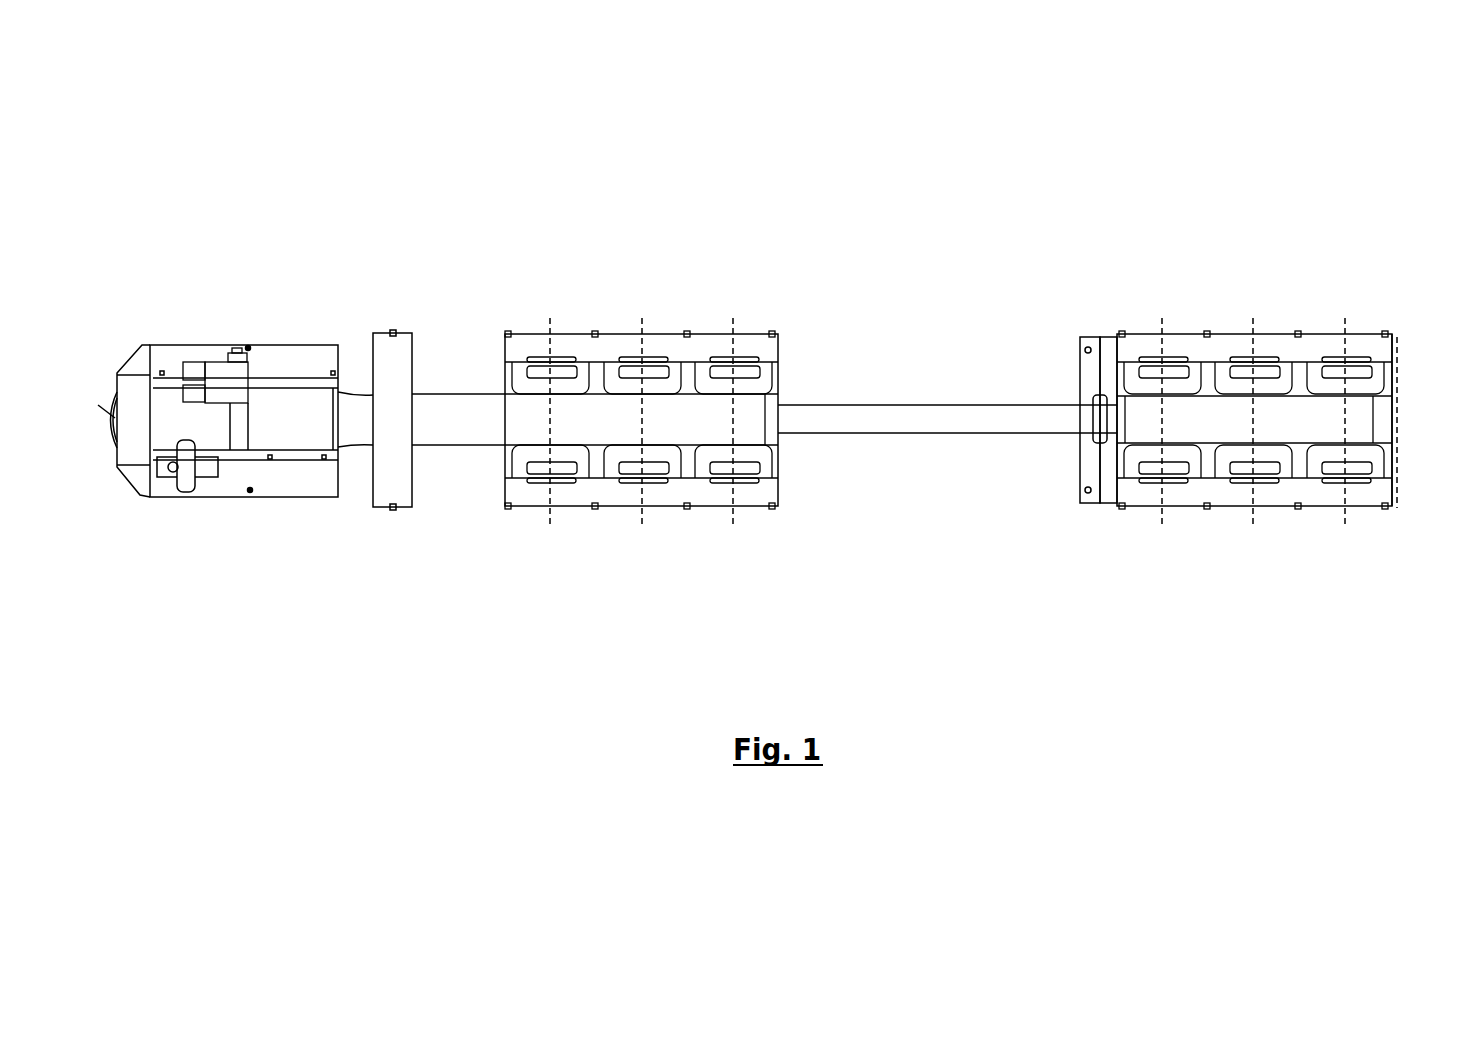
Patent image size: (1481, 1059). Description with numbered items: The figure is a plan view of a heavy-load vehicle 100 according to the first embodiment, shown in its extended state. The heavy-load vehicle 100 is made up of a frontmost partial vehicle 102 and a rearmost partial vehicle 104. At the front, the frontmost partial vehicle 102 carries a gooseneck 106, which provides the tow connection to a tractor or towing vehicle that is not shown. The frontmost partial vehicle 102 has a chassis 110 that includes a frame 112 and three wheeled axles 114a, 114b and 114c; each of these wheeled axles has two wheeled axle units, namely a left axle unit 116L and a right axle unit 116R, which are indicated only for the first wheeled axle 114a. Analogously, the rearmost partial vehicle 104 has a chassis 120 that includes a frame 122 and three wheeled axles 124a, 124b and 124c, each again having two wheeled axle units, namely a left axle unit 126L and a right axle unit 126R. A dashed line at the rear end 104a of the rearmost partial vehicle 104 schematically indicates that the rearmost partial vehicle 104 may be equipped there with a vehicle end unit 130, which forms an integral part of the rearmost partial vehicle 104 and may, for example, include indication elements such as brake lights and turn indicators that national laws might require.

The heavy-load vehicle 100 is at (784, 319).
The frontmost partial vehicle 102 is at (659, 365).
The rearmost partial vehicle 104 is at (1258, 363).
The rear end 104a is at (1380, 338).
The gooseneck 106 is at (220, 378).
The chassis 110 is at (675, 342).
The frame 112 is at (773, 413).
The first wheeled axle 114a is at (552, 441).
The second wheeled axle 114b is at (641, 441).
The third wheeled axle 114c is at (733, 441).
The right axle unit 116R is at (548, 332).
The left axle unit 116L is at (550, 507).
The chassis 120 is at (1283, 340).
The frame 122 is at (1382, 417).
The first wheeled axle 124a is at (1167, 440).
The second wheeled axle 124b is at (1258, 440).
The third wheeled axle 124c is at (1350, 440).
The right axle unit 126R is at (1160, 335).
The left axle unit 126L is at (1162, 508).
The vehicle end unit 130 is at (1397, 460).